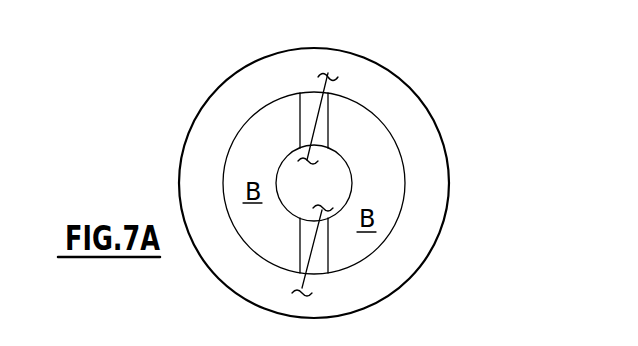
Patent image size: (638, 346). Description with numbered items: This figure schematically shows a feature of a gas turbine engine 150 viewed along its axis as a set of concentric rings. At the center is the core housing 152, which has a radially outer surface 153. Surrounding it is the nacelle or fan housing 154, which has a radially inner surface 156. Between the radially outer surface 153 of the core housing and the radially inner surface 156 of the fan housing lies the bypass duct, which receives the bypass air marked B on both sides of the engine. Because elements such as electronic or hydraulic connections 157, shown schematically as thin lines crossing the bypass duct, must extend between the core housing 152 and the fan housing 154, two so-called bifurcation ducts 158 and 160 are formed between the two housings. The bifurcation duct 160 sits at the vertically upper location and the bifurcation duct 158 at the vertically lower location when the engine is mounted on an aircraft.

The gas turbine engine 150 is at (418, 48).
The core housing 152 is at (320, 180).
The radially outer surface 153 is at (352, 177).
The nacelle or fan housing 154 is at (253, 83).
The radially inner surface 156 is at (255, 113).
The electronic or hydraulic connections 157 is at (312, 129).
The bifurcation duct 158 is at (317, 250).
The bifurcation duct 160 is at (313, 103).